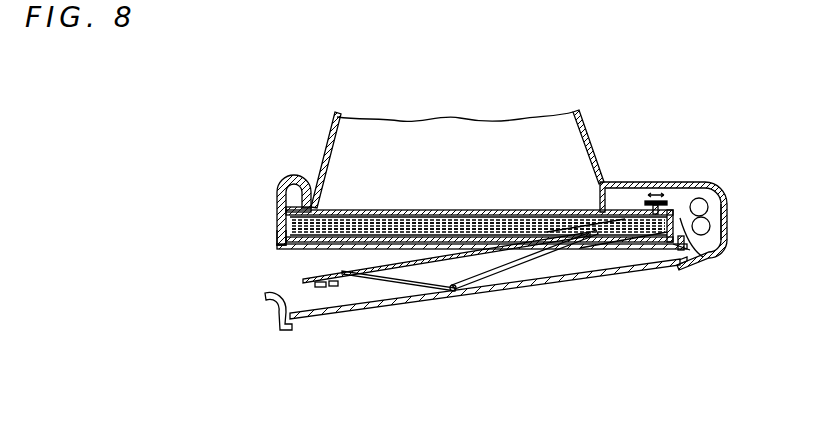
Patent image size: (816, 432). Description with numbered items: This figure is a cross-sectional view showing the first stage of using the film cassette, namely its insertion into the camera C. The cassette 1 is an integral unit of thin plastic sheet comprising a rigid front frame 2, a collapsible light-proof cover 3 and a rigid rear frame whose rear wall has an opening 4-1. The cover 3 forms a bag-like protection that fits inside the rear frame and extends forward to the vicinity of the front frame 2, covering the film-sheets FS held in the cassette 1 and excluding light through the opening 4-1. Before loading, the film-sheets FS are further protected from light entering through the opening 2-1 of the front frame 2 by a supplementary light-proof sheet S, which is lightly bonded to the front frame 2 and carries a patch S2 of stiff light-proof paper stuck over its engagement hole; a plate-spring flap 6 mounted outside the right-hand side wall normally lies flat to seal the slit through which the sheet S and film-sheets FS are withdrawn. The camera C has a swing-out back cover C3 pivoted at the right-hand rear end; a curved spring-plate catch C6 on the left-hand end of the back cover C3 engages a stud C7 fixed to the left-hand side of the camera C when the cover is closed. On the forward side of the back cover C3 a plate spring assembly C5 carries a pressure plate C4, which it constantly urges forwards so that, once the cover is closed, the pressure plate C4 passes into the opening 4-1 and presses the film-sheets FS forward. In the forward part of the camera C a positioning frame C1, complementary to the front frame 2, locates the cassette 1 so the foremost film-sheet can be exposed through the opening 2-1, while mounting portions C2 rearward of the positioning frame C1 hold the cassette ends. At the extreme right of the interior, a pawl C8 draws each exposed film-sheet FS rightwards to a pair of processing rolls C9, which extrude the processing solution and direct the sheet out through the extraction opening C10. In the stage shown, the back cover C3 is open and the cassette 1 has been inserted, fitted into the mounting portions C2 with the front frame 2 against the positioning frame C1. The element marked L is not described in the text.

The front frame 2 is at (293, 177).
The opening of the front frame 2-1 is at (313, 205).
The supplementary light-proof sheet S is at (437, 214).
The collapsible light-proof cover 3 is at (467, 233).
The camera C is at (574, 111).
The film-sheet FS is at (291, 183).
The mounting portion C2 is at (287, 213).
The stud C7 is at (283, 233).
The opening of the rear frame 4-1 is at (318, 250).
The cassette 1 is at (393, 226).
The positioning frame C1 is at (602, 205).
The lamp L is at (650, 193).
The pawl C8 is at (663, 205).
The extraction opening C10 is at (717, 218).
The processing rolls C9 is at (702, 229).
The flap 6 is at (700, 257).
The patch S2 is at (655, 243).
The back cover C3 is at (557, 272).
The spring-plate catch C6 is at (271, 312).
The pressure plate C4 is at (328, 268).
The plate spring assembly C5 is at (383, 287).